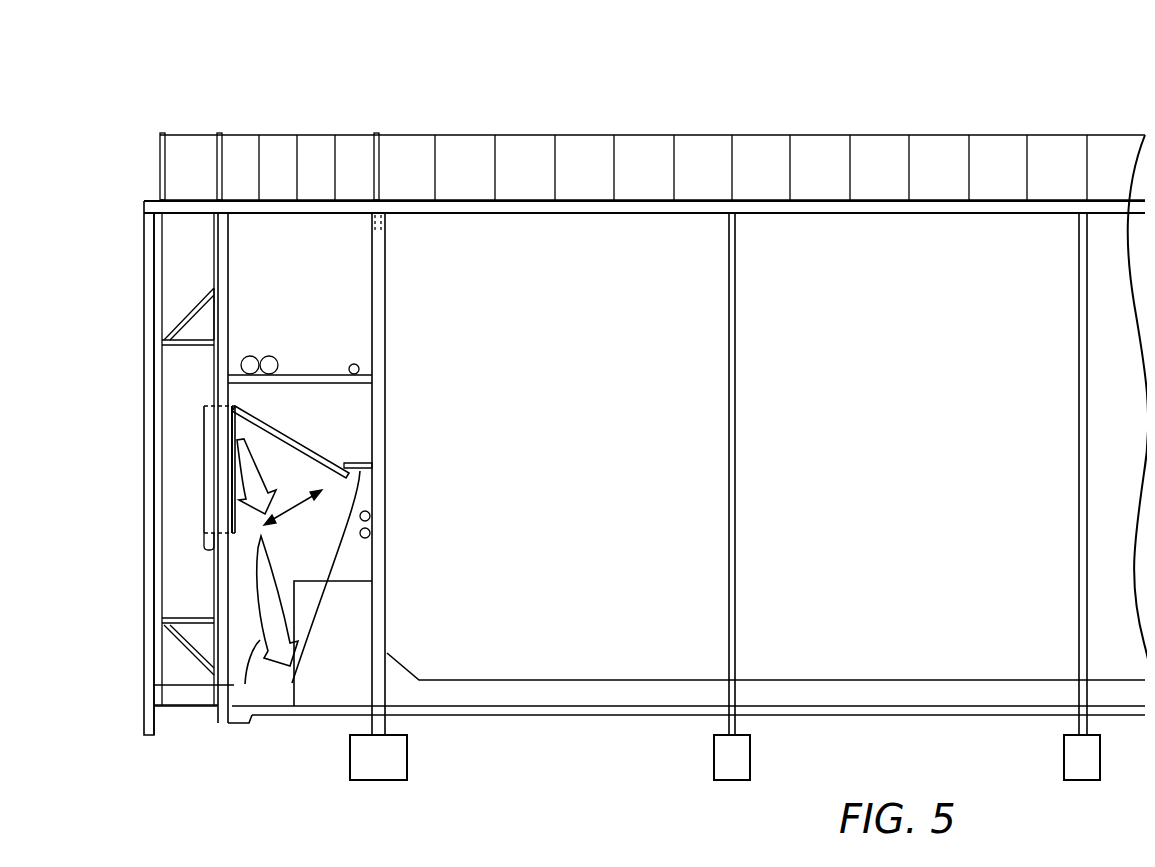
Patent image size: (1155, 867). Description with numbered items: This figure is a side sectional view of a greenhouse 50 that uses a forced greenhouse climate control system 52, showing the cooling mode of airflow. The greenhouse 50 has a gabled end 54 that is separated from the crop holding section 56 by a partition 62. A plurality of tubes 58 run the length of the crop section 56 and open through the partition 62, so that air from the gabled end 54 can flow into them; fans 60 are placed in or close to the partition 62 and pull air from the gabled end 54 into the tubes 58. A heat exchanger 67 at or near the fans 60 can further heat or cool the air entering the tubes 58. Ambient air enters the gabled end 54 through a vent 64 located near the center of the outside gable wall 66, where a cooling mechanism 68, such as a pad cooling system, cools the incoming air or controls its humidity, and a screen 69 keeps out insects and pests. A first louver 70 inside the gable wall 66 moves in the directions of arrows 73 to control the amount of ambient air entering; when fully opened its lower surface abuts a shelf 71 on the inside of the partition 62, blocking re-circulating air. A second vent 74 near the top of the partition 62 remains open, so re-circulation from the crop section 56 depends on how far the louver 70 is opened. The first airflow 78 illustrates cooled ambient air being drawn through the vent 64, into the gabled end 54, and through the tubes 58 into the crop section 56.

The greenhouse 50 is at (992, 109).
The forced greenhouse climate control system 52 is at (277, 131).
The gabled end 54 is at (248, 233).
The crop holding section 56 is at (886, 222).
The tubes 58 is at (575, 690).
The fans 60 is at (325, 690).
The partition 62 is at (384, 255).
The vent 64 is at (207, 462).
The outside gable wall 66 is at (212, 262).
The heat exchanger 67 is at (410, 689).
The cooling mechanism 68 is at (200, 502).
The screen 69 is at (160, 598).
The first louver 70 is at (248, 422).
The shelf 71 is at (297, 658).
The arrows 73 is at (285, 505).
The second vent 74 is at (370, 225).
The first airflow 78 is at (200, 410).